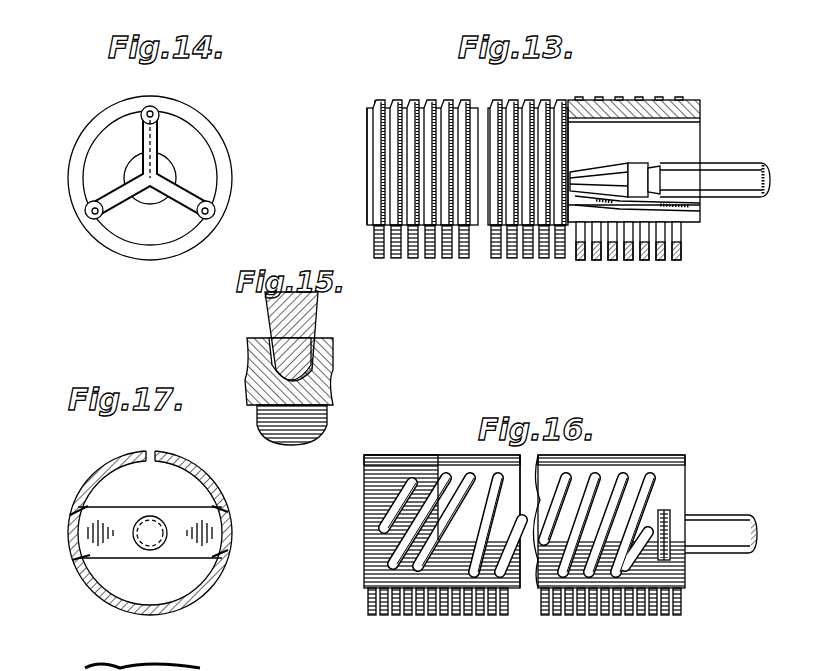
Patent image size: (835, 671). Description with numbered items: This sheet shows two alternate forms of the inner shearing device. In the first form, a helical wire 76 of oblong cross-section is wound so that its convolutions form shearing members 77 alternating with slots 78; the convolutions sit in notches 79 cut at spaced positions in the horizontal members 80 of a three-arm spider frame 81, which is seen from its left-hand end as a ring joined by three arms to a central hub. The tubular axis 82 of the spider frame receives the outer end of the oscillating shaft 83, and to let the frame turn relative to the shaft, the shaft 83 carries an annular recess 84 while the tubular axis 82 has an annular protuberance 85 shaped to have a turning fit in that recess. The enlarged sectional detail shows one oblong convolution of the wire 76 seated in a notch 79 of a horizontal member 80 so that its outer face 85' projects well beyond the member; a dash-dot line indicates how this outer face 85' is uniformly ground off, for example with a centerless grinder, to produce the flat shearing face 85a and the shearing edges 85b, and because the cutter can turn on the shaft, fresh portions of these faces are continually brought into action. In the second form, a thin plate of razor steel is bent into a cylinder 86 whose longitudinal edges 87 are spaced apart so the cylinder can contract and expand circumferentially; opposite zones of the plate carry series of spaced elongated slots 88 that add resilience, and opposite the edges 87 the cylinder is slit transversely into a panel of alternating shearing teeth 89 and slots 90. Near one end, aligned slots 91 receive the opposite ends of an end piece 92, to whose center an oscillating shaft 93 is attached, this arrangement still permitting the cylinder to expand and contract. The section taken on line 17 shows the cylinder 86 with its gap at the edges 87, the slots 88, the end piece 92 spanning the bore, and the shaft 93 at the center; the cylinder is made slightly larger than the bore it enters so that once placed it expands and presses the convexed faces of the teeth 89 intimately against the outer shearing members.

In FIG. 14, the helical wire 76 is at (193, 97).
In FIG. 13, the helical wire 76 is at (607, 94).
In FIG. 15, the helical wire 76 is at (326, 328).
In FIG. 14, the shearing members 77 is at (229, 193).
In FIG. 13, the shearing members 77 is at (597, 262).
In FIG. 15, the shearing members 77 is at (290, 340).
In FIG. 13, the slots 78 is at (660, 262).
In FIG. 14, the notches 79 is at (92, 212).
In FIG. 13, the notches 79 is at (596, 118).
In FIG. 15, the notches 79 is at (318, 378).
In FIG. 13, the horizontal members 80 is at (700, 120).
In FIG. 15, the horizontal members 80 is at (333, 400).
In FIG. 14, the three-arm spider frame 81 is at (192, 190).
In FIG. 13, the three-arm spider frame 81 is at (672, 104).
In FIG. 13, the tubular axis 82 is at (700, 216).
In FIG. 14, the oscillating shaft 83 is at (151, 184).
In FIG. 13, the oscillating shaft 83 is at (760, 162).
In FIG. 13, the annular recess 84 is at (655, 168).
In FIG. 13, the annular protuberance 85 is at (675, 181).
In FIG. 15, the outer faces of the convolutions 85' is at (336, 279).
In FIG. 15, the shearing faces 85a is at (316, 306).
In FIG. 15, the shearing edges 85b is at (264, 296).
In FIG. 17, the cylinder 86 is at (112, 466).
In FIG. 16, the cylinder 86 is at (678, 494).
In FIG. 17, the longitudinal edges 87 is at (150, 452).
In FIG. 16, the longitudinal edges 87 is at (392, 462).
In FIG. 17, the elongated slots 88 is at (84, 492).
In FIG. 16, the elongated slots 88 is at (626, 478).
In FIG. 17, the shearing teeth 89 is at (173, 606).
In FIG. 16, the shearing teeth 89 is at (396, 616).
In FIG. 16, the slots 90 is at (550, 636).
In FIG. 17, the aligned slots 91 is at (72, 530).
In FIG. 16, the aligned slots 91 is at (668, 532).
In FIG. 17, the end piece 92 is at (124, 514).
In FIG. 16, the end piece 92 is at (666, 552).
In FIG. 17, the oscillating shaft 93 is at (150, 538).
In FIG. 16, the oscillating shaft 93 is at (740, 521).
In FIG. 16, the section line 17— 17 is at (443, 635).